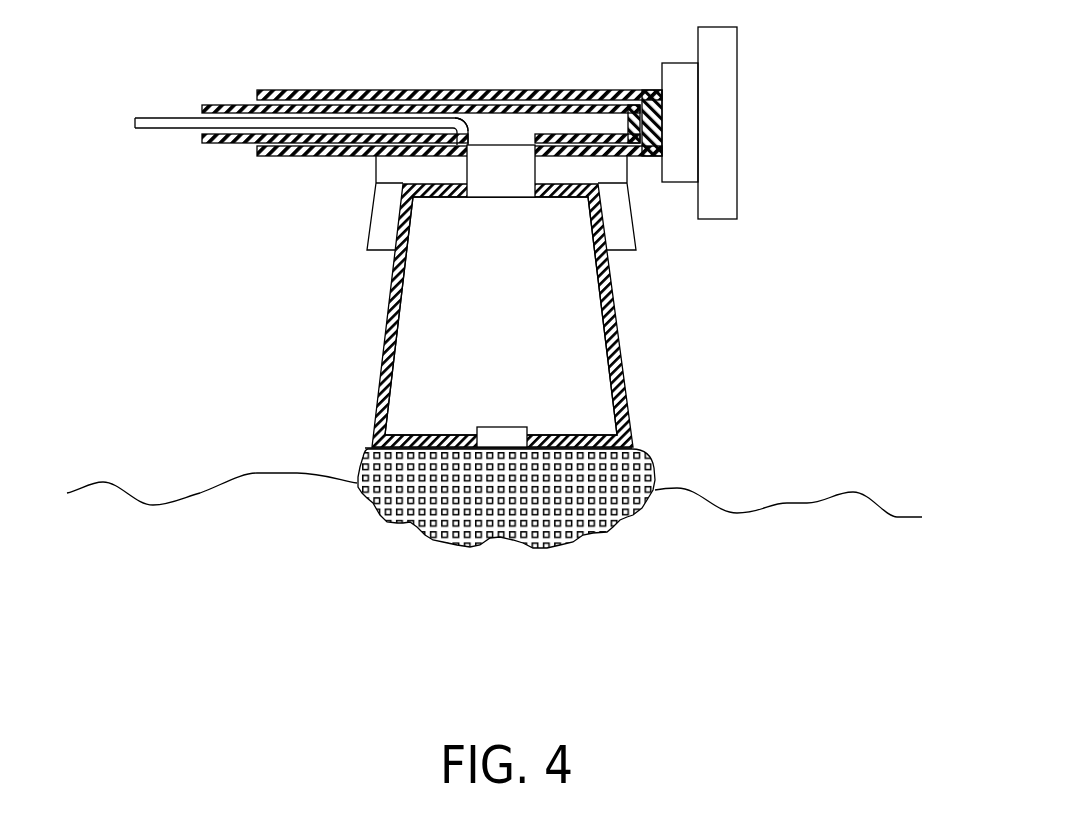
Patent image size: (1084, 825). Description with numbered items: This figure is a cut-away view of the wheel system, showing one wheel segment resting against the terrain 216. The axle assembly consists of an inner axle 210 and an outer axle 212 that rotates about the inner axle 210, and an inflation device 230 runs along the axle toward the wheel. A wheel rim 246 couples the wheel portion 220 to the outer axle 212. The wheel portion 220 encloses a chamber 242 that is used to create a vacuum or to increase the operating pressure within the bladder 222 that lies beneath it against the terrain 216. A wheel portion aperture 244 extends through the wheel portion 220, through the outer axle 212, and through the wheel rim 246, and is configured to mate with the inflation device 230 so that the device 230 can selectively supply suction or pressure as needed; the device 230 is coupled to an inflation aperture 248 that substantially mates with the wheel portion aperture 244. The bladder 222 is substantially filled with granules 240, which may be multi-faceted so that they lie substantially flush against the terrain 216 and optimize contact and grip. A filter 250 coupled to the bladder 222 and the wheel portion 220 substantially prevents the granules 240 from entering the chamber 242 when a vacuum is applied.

The inner axle 210 is at (215, 103).
The outer axle 212 is at (293, 157).
The inflation device 230 is at (147, 130).
The inflation aperture 248 is at (517, 138).
The wheel portion aperture 244 is at (498, 172).
The wheel rim 246 is at (623, 237).
The wheel portion 220 is at (618, 298).
The chamber 242 is at (494, 312).
The filter 250 is at (498, 438).
The granules 240 is at (413, 507).
The bladder 222 is at (647, 458).
The terrain 216 is at (654, 615).